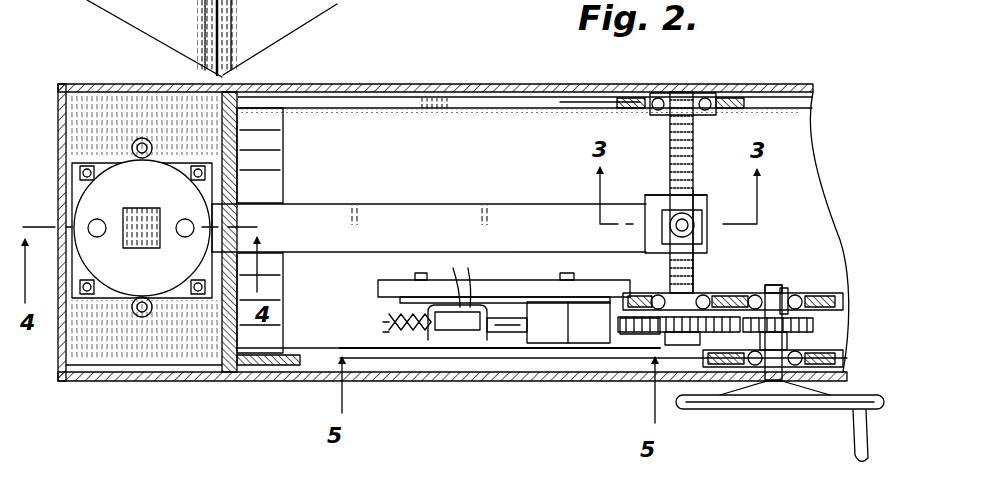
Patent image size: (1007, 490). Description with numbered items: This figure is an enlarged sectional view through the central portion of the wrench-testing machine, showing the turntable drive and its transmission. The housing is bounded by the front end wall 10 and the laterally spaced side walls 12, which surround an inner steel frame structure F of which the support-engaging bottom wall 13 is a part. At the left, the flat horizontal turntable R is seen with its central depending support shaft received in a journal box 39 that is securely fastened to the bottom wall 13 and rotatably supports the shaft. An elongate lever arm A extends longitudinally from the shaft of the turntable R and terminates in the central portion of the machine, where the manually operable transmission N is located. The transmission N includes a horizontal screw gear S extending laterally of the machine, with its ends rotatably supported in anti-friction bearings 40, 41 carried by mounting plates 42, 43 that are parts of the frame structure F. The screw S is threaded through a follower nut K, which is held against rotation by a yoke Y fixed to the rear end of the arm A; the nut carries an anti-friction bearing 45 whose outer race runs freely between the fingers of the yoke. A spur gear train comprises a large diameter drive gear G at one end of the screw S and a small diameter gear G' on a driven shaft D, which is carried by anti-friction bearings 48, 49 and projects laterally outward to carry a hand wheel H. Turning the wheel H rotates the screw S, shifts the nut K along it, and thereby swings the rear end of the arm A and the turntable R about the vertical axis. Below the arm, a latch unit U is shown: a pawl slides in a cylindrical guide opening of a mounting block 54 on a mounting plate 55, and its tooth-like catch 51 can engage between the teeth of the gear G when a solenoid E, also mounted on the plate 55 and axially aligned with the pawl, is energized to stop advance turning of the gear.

The front end wall 10 is at (112, 5).
The side walls 12 is at (530, 57).
The bottom wall 13 is at (196, 362).
The journal box 39 is at (97, 305).
The turntable R is at (118, 307).
The lever arm A is at (514, 208).
The frame structure F is at (455, 107).
The mounting plate 43 is at (590, 70).
The anti-friction bearing 41 is at (710, 88).
The screw gear S is at (665, 137).
The yoke Y is at (658, 197).
The follower nut K is at (708, 238).
The anti-friction bearing 45 is at (707, 197).
The anti-friction bearing 40 is at (705, 292).
The mounting plate 42 is at (820, 293).
The anti-friction bearing 48 is at (800, 295).
The transmission N is at (805, 252).
The drive gear G is at (658, 374).
The drive gear G' is at (808, 324).
The driven shaft D is at (770, 383).
The anti-friction bearing 49 is at (803, 349).
The hand wheel H is at (786, 408).
The mounting plate 55 is at (537, 270).
The solenoid E is at (447, 340).
The latch unit U is at (530, 343).
The mounting block 54 is at (553, 337).
The catch 51 is at (603, 337).